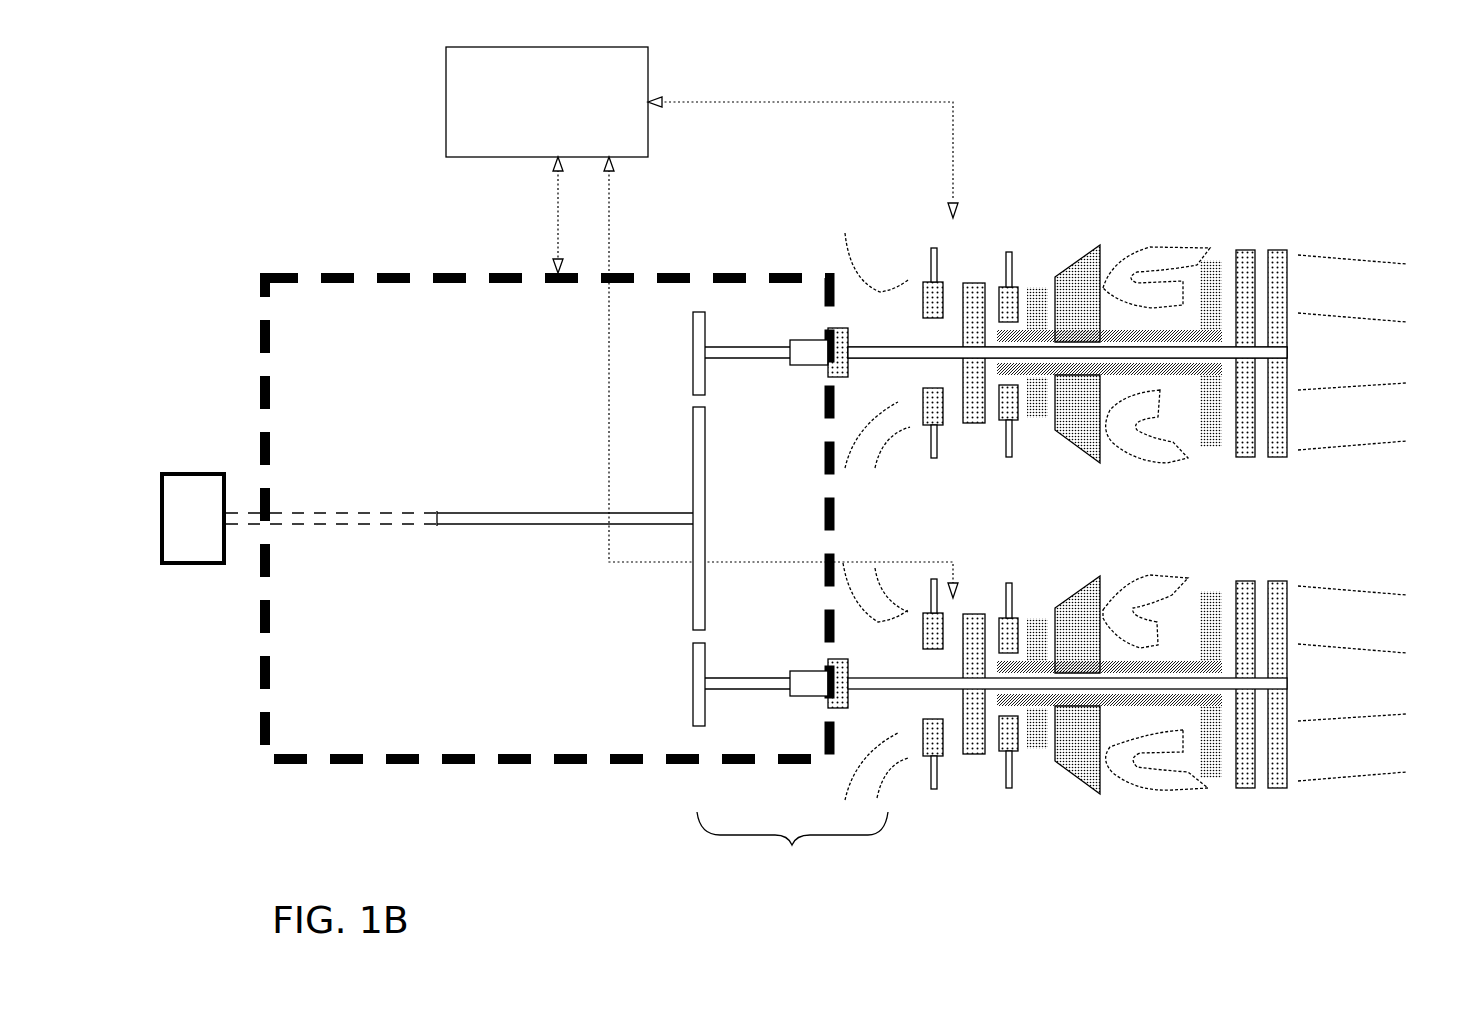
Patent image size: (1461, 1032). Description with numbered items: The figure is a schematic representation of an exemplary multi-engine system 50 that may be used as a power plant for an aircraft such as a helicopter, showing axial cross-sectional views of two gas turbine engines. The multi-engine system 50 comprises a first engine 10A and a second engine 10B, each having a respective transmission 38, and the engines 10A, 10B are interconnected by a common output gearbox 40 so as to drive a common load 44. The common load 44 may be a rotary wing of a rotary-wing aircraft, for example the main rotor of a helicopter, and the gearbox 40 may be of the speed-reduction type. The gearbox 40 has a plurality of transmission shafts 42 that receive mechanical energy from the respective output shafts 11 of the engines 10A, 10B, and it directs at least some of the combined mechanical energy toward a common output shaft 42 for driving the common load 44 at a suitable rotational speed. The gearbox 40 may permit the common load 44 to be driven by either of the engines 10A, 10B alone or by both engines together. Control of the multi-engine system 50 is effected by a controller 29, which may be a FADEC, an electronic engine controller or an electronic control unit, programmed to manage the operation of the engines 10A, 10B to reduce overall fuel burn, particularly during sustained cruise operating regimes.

The first gas turbine engine 10A is at (1155, 205).
The second gas turbine engine 10B is at (1080, 828).
The output shaft 11 is at (880, 345).
The controller 29 is at (648, 72).
The transmission 38 is at (803, 559).
The output gearbox 40 is at (445, 765).
The transmission shaft 42 is at (247, 526).
The common load 44 is at (195, 472).
The multi-engine system 50 is at (330, 190).